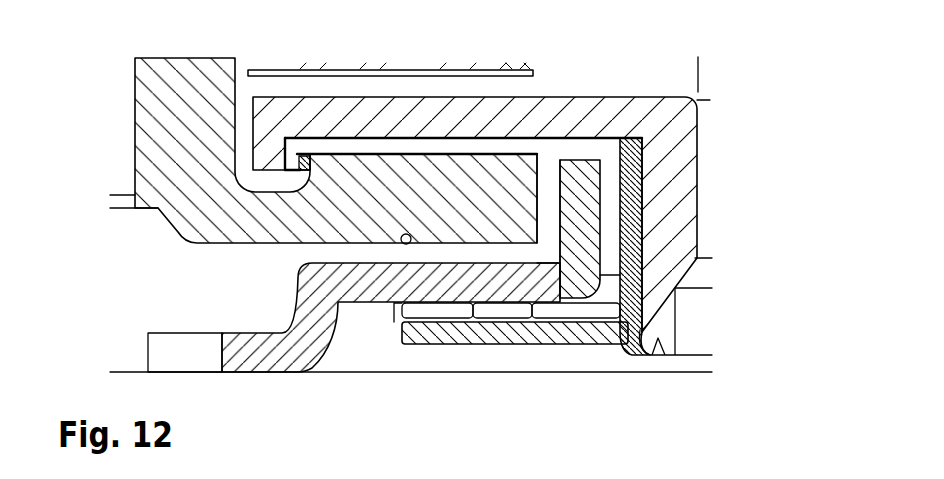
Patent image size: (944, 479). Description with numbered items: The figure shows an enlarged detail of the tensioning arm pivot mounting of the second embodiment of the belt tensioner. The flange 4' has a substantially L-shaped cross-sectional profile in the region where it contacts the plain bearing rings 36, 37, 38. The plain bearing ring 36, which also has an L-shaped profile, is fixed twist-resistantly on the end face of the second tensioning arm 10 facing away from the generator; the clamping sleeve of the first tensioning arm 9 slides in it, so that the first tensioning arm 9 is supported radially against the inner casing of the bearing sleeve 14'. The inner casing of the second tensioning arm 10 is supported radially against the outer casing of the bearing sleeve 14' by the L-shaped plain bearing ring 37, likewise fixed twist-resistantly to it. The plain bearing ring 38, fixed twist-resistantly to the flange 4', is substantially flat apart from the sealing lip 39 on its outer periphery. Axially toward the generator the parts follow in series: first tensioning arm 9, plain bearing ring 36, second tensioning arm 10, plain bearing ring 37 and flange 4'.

The flange 4' is at (354, 352).
The first tensioning arm 9 is at (632, 110).
The second tensioning arm 10 is at (197, 243).
The bearing sleeve 14' is at (683, 246).
The plain bearing ring 36 is at (381, 143).
The plain bearing ring 37 is at (547, 187).
The plain bearing ring 38 is at (572, 312).
The sealing lip 39 is at (394, 325).